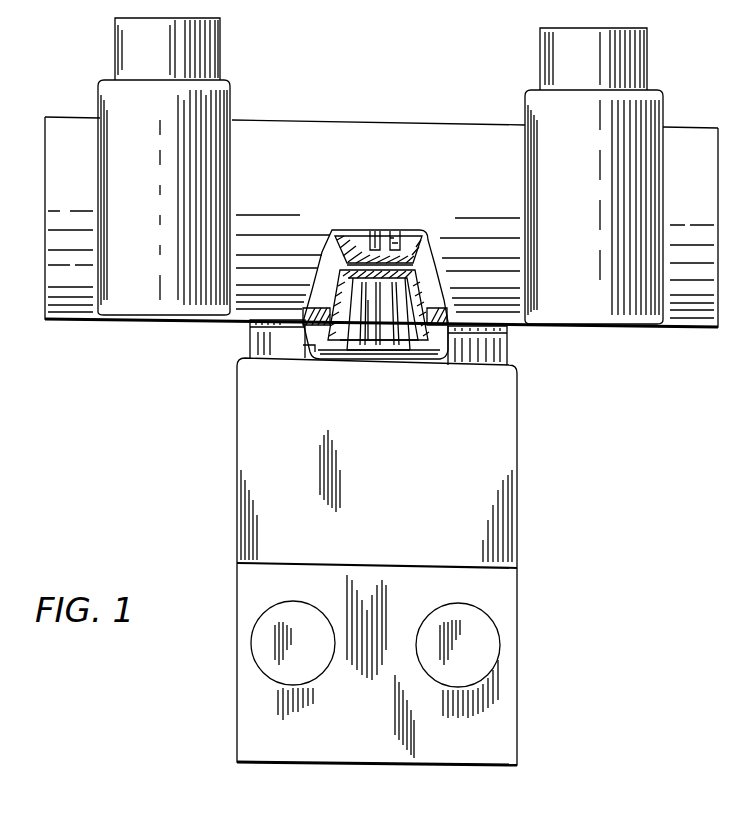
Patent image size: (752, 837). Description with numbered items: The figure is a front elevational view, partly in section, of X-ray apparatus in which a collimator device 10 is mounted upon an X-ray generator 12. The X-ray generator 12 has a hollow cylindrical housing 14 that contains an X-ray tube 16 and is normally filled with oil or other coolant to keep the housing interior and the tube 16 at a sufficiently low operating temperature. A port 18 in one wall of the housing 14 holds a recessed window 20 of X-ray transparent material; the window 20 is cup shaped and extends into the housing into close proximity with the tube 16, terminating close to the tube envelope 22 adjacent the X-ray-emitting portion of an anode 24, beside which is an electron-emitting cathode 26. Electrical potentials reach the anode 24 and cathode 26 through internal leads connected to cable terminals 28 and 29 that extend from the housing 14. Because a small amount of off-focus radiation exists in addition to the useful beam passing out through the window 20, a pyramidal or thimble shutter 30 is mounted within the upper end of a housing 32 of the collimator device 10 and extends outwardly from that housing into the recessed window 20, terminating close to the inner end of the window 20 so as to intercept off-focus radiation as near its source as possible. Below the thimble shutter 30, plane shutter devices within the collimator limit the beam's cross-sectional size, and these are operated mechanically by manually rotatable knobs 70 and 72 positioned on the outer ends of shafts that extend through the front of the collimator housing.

The collimator device 10 is at (519, 536).
The X-ray generator 12 is at (645, 333).
The hollow cylindrical housing 14 is at (350, 130).
The X-ray tube 16 is at (422, 232).
The port 18 is at (318, 306).
The recessed window 20 is at (343, 276).
The tube envelope 22 is at (422, 262).
The anode 24 is at (377, 228).
The cathode 26 is at (401, 240).
The cable terminal 28 is at (222, 52).
The cable terminal 29 is at (649, 48).
The thimble shutter 30 is at (388, 319).
The housing 32 is at (517, 392).
The knob 70 is at (308, 672).
The knob 72 is at (438, 667).